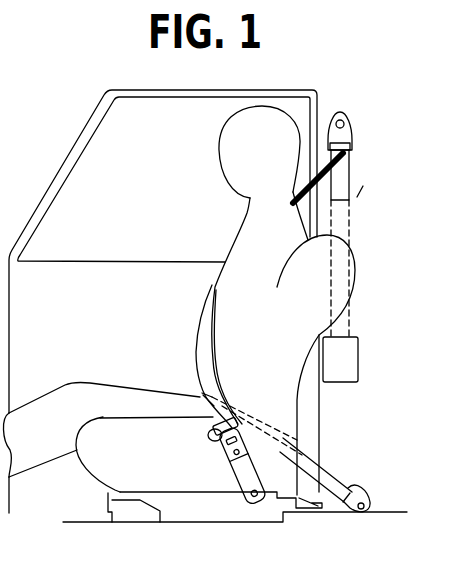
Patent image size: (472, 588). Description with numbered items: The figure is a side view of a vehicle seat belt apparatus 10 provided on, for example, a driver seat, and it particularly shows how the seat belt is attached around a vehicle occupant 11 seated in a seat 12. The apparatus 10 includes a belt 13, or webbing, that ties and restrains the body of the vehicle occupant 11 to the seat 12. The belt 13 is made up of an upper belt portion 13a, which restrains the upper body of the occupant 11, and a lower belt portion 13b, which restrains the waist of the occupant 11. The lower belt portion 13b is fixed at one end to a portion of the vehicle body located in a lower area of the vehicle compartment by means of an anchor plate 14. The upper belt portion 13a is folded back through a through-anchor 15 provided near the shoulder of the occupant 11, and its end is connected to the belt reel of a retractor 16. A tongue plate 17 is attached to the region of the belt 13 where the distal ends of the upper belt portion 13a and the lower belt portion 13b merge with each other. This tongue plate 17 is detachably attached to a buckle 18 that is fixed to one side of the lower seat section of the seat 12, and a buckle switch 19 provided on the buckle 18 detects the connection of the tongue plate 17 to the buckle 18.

The vehicle seat belt apparatus 10 is at (370, 348).
The vehicle occupant 11 is at (248, 252).
The seat 12 is at (290, 389).
The belt 13 is at (193, 353).
The upper belt portion 13a is at (345, 180).
The lower belt portion 13b is at (323, 466).
The anchor plate 14 is at (368, 496).
The through-anchor 15 is at (354, 140).
The retractor 16 is at (350, 350).
The tongue plate 17 is at (218, 443).
The buckle 18 is at (262, 467).
The buckle switch 19 is at (217, 457).